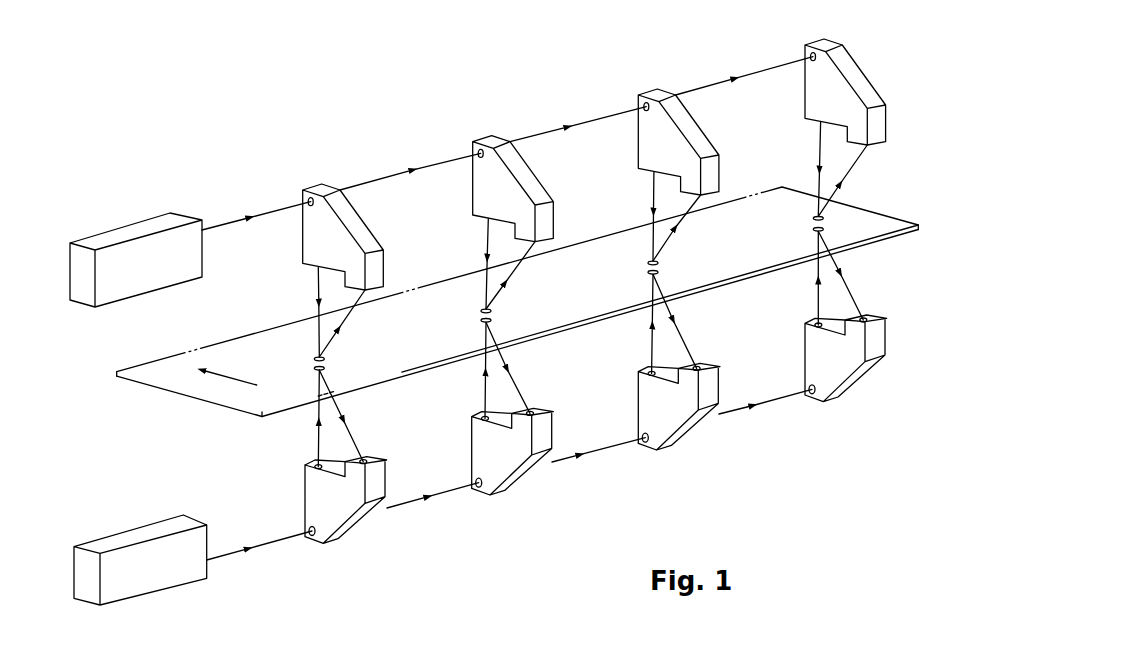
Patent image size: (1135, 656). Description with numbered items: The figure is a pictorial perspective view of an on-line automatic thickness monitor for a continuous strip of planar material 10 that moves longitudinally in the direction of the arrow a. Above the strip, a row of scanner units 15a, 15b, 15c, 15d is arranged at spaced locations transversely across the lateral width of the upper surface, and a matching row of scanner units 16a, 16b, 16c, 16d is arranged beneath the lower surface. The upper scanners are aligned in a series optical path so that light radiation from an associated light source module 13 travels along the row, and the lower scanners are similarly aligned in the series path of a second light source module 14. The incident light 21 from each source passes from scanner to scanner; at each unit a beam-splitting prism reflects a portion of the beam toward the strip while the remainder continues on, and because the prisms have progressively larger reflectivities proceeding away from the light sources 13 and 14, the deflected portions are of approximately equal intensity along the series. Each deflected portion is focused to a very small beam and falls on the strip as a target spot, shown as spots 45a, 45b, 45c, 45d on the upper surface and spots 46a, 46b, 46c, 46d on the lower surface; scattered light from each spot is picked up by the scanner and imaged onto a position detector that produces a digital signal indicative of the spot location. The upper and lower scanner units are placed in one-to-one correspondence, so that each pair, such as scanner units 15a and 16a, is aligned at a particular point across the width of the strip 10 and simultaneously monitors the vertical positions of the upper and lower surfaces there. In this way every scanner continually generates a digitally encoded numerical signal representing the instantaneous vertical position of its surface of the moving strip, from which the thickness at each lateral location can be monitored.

The strip of planar material 10 is at (247, 350).
The light source module 13 is at (145, 228).
The light source module 14 is at (160, 595).
The scanner unit 15a is at (323, 189).
The scanner unit 15b is at (490, 140).
The scanner unit 15c is at (655, 92).
The scanner unit 15d is at (823, 43).
The scanner unit 16a is at (333, 544).
The scanner unit 16b is at (505, 498).
The scanner unit 16c is at (665, 452).
The scanner unit 16d is at (833, 403).
The incident light 21 is at (250, 213).
The target spot 45a is at (324, 358).
The target spot 45b is at (491, 310).
The target spot 45c is at (658, 262).
The target spot 45d is at (824, 217).
The target spot 46a is at (325, 368).
The target spot 46b is at (492, 320).
The target spot 46c is at (659, 272).
The target spot 46d is at (824, 229).
The direction of strip movement a is at (233, 378).